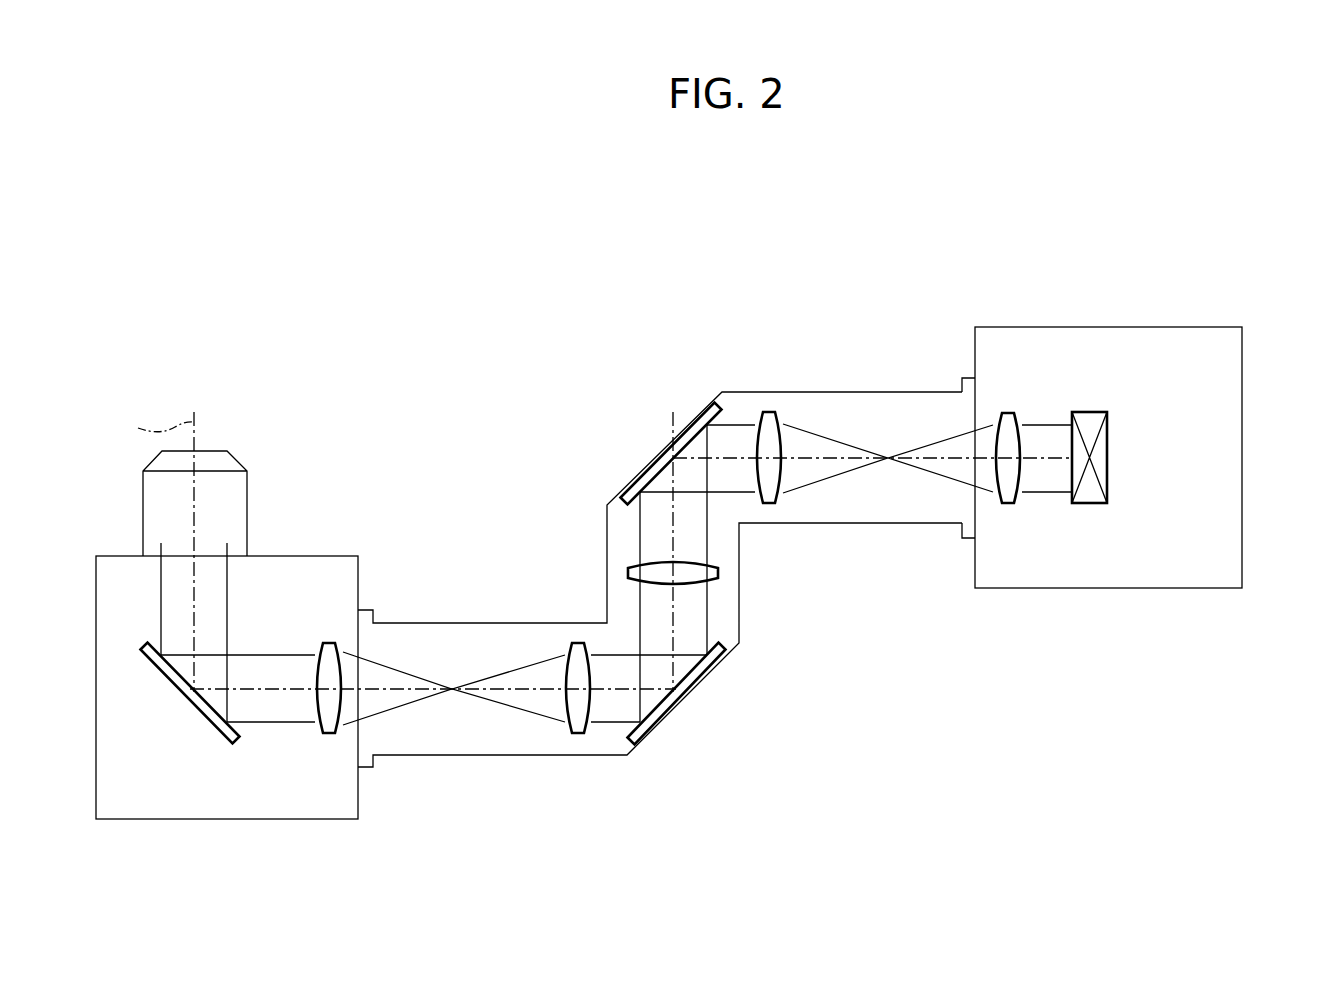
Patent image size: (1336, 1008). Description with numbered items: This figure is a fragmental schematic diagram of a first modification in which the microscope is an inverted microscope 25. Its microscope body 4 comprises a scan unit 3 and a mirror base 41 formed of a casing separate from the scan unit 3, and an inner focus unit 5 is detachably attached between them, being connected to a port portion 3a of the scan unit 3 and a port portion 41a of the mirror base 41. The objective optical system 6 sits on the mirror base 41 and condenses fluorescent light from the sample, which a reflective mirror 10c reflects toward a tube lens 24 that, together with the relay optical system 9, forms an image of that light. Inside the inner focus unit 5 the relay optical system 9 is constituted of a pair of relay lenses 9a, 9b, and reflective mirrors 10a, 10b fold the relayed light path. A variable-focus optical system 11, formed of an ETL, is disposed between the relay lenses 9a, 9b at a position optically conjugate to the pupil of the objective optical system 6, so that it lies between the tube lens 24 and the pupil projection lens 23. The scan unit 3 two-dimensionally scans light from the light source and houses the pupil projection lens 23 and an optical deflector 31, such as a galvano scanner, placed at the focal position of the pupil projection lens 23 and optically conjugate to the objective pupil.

The inverted microscope 25 is at (1197, 190).
The scan unit 3 is at (1097, 327).
The port portion 3a is at (975, 497).
The microscope body 4 is at (1270, 439).
The inner focus unit 5 is at (759, 666).
The objective optical system 6 is at (143, 507).
The relay optical system 9 is at (596, 619).
The relay lens 9a is at (578, 737).
The relay lens 9b is at (770, 412).
The reflective mirror 10a is at (680, 703).
The reflective mirror 10b is at (662, 450).
The reflective mirror 10c is at (200, 720).
The variable-focus optical system 11 is at (718, 573).
The pupil projection lens 23 is at (1008, 503).
The tube lens 24 is at (327, 737).
The optical deflector 31 is at (1085, 503).
The mirror base 41 is at (325, 556).
The port portion 41a is at (358, 737).